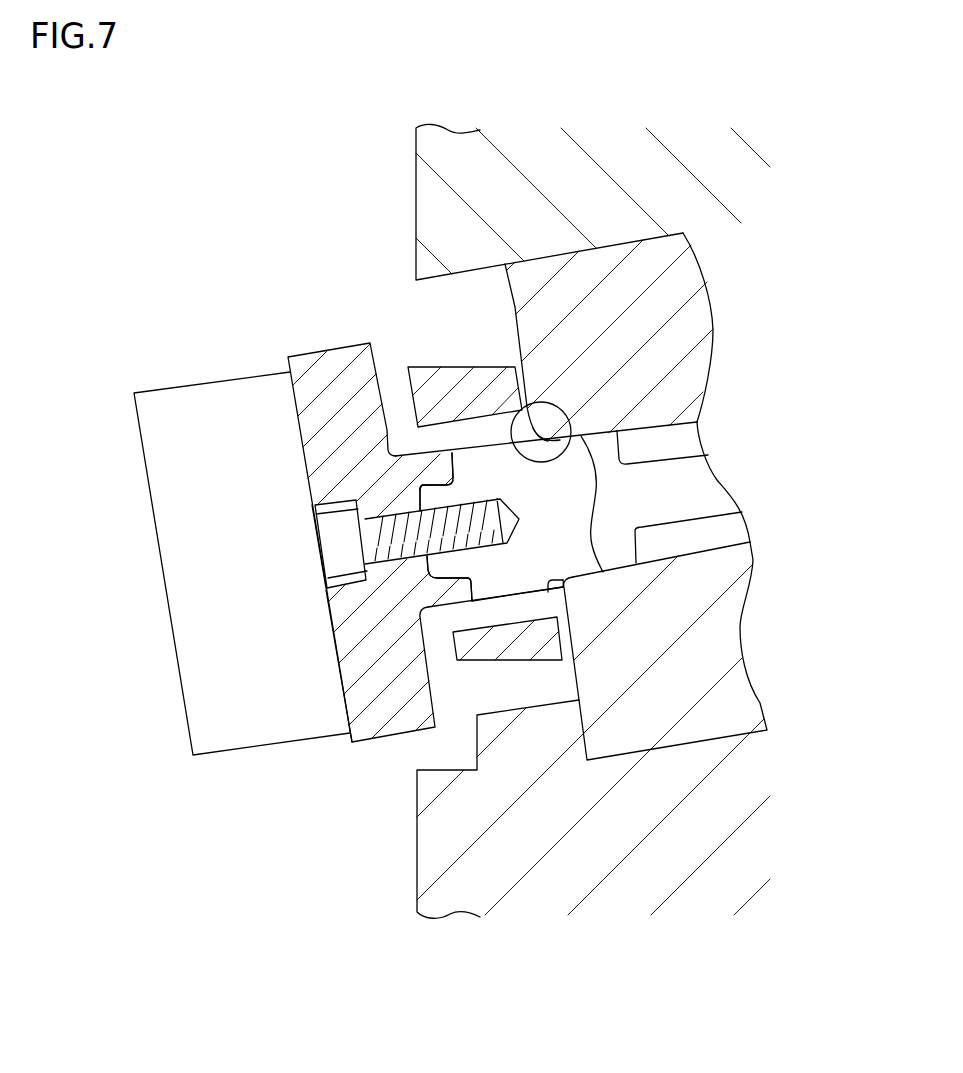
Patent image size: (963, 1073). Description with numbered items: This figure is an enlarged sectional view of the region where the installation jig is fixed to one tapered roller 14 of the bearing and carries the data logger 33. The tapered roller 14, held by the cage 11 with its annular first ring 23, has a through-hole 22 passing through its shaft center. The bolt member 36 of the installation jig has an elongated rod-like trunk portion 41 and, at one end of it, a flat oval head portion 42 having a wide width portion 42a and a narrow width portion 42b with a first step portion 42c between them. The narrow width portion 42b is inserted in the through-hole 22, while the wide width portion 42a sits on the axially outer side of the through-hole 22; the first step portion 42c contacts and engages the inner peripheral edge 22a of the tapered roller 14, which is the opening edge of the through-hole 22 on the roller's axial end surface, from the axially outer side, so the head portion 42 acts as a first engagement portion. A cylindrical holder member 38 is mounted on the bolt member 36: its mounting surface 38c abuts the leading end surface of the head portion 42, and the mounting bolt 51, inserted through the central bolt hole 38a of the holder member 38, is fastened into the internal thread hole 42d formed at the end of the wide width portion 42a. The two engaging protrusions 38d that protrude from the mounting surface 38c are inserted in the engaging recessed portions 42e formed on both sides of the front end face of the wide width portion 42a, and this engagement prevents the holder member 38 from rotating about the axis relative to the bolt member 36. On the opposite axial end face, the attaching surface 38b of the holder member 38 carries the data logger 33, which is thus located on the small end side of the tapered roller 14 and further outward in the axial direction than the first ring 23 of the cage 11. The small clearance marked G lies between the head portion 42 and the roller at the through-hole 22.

The cage 11 is at (502, 352).
The tapered roller 14 is at (552, 290).
The through-hole 22 is at (752, 535).
The inner peripheral edge 22a is at (548, 595).
The first ring 23 is at (420, 367).
The data logger 33 is at (173, 386).
The bolt member 36 is at (679, 430).
The holder member 38 is at (328, 350).
The bolt hole 38a is at (320, 561).
The attaching surface 38b is at (337, 693).
The mounting surface 38c is at (410, 480).
The engaging protrusion 38d is at (453, 475).
The trunk portion 41 is at (707, 490).
The head portion 42 is at (488, 432).
The wide width portion 42a is at (510, 597).
The narrow width portion 42b is at (570, 422).
The first step portion 42c is at (563, 580).
The internal thread hole 42d is at (477, 565).
The engaging recessed portion 42e is at (432, 480).
The mounting bolt 51 is at (327, 540).
The gap G is at (560, 413).